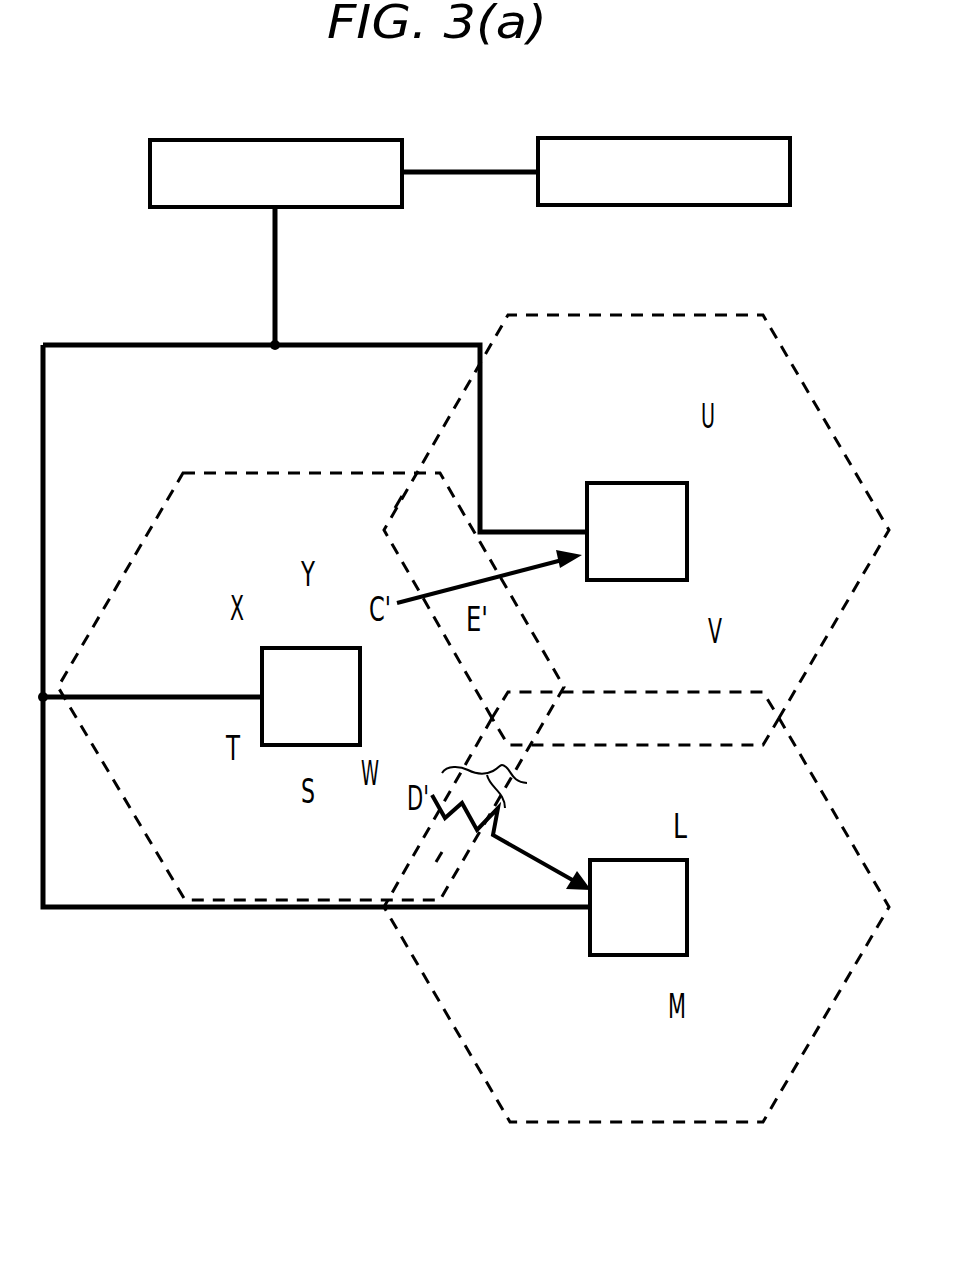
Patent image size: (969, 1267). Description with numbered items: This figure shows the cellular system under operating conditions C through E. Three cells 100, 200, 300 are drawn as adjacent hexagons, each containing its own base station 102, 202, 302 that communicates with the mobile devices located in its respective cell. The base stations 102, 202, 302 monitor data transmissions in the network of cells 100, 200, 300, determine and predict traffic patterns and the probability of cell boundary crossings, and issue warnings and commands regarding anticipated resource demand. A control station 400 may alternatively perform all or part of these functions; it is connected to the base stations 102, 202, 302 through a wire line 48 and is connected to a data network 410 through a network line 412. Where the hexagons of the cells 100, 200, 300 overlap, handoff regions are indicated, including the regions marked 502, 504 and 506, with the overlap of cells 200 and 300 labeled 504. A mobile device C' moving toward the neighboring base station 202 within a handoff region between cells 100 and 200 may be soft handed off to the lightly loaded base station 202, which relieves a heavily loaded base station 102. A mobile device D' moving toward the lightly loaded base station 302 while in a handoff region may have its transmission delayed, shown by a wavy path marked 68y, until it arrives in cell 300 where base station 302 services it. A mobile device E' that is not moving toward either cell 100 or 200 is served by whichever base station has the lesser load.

The control station 400 is at (270, 140).
The data network 410 is at (660, 138).
The network line 412 is at (460, 172).
The wire line 48 is at (278, 316).
The cell 100 is at (296, 473).
The cell 200 is at (638, 325).
The cell 300 is at (832, 800).
The base station 102 is at (352, 700).
The base station 202 is at (676, 537).
The base station 302 is at (678, 910).
The cell boundary region 502 is at (430, 862).
The overlap region between cells 504 is at (637, 745).
The cell boundary region 506 is at (405, 521).
The mobile terminal path 68y is at (527, 783).